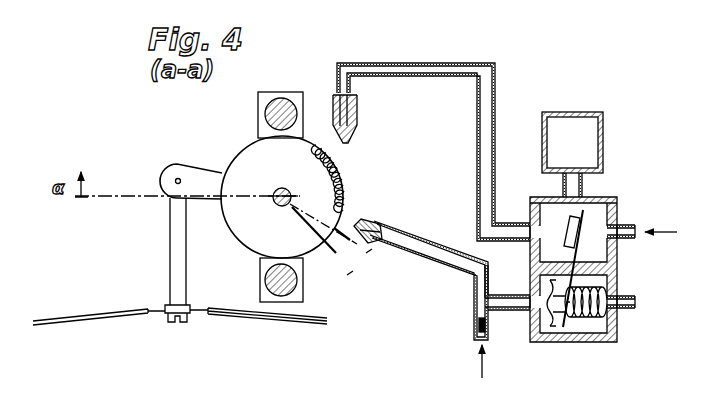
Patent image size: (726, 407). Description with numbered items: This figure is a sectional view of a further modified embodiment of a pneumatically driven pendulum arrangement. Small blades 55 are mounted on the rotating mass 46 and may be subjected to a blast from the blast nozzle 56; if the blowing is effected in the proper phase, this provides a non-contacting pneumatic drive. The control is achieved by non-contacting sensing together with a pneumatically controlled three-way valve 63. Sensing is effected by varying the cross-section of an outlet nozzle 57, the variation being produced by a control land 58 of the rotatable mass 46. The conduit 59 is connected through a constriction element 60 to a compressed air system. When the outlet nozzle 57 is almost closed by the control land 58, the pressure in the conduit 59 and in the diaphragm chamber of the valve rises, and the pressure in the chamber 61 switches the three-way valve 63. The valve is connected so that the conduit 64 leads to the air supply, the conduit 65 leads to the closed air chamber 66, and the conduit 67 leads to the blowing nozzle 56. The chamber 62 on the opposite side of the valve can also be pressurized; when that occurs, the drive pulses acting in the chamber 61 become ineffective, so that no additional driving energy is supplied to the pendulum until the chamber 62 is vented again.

The rotating mass 46 is at (245, 168).
The small blades 55 is at (357, 172).
The blast nozzle 56 is at (352, 137).
The outlet nozzle 57 is at (368, 221).
The control land 58 is at (327, 256).
The conduit 59 is at (417, 255).
The constriction element 60 is at (478, 323).
The chamber 61 is at (548, 330).
The chamber 62 is at (596, 328).
The three-way valve 63 is at (600, 213).
The conduit 64 is at (632, 240).
The conduit 65 is at (583, 186).
The closed air chamber 66 is at (603, 160).
The conduit 67 is at (478, 110).